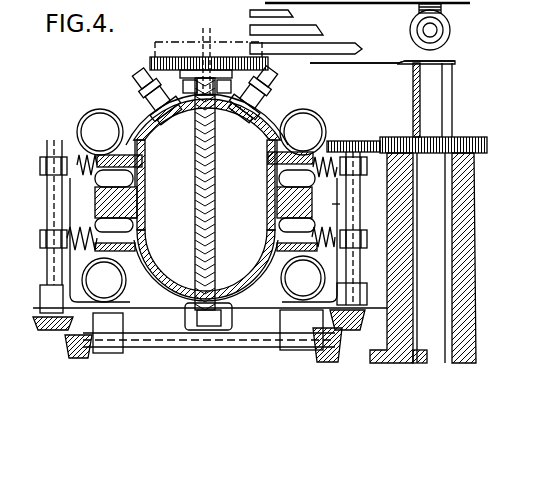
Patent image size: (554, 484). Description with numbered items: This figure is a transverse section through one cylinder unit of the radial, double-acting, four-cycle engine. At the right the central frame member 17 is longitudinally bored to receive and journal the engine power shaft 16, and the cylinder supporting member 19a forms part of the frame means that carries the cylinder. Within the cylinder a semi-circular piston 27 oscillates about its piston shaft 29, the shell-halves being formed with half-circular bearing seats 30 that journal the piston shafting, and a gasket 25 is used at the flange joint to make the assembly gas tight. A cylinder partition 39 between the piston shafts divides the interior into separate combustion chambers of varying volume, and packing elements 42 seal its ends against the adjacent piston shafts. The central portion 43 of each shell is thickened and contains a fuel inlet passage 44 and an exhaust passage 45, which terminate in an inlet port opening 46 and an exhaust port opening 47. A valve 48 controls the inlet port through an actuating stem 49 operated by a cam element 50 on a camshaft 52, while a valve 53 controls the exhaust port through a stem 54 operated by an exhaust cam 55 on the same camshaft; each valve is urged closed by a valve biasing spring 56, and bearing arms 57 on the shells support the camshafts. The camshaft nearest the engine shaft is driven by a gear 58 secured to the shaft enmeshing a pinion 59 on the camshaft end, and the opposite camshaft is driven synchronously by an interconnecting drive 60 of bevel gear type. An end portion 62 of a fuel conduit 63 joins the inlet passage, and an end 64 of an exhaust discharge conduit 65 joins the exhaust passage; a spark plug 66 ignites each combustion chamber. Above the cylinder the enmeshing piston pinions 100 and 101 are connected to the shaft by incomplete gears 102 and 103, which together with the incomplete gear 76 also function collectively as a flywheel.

The piston pinion 100 is at (179, 44).
The piston pinion 101 is at (172, 62).
The gasket 25 is at (204, 57).
The incomplete gear 76 is at (253, 30).
The incomplete gear 102 is at (354, 48).
The incomplete gear 103 is at (362, 62).
The bearing arm 57 is at (416, 14).
The exhaust cam 55 is at (448, 26).
The camshaft 52 is at (445, 30).
The cam element 50 is at (433, 30).
The valve biasing spring 56 is at (442, 11).
The spark plug 66 is at (148, 76).
The piston shaft 29 is at (190, 84).
The bearing seat 30 is at (190, 90).
The piston 27 is at (195, 142).
The exhaust port opening 47 is at (268, 262).
The packing element 42 is at (215, 165).
The cylinder partition 39 is at (213, 196).
The exhaust passage 45 is at (262, 310).
The fuel inlet passage 44 is at (100, 118).
The fuel conduit 63 is at (83, 117).
The end portion of fuel conduit 62 is at (107, 110).
The valve stem 54 is at (132, 247).
The actuating stem 49 is at (112, 162).
The central portion of cylinder shell 43 is at (137, 208).
The valve 48 is at (146, 164).
The fuel inlet port opening 46 is at (146, 185).
The valve 53 is at (140, 238).
The interconnecting drive 60 is at (192, 336).
The end of exhaust discharge conduit 64 is at (112, 280).
The exhaust discharge conduit 65 is at (58, 290).
The pinion 59 is at (362, 142).
The gear 58 is at (465, 138).
The cylinder supporting member 19a is at (386, 208).
The central frame member 17 is at (472, 192).
The engine power shaft 16 is at (438, 268).